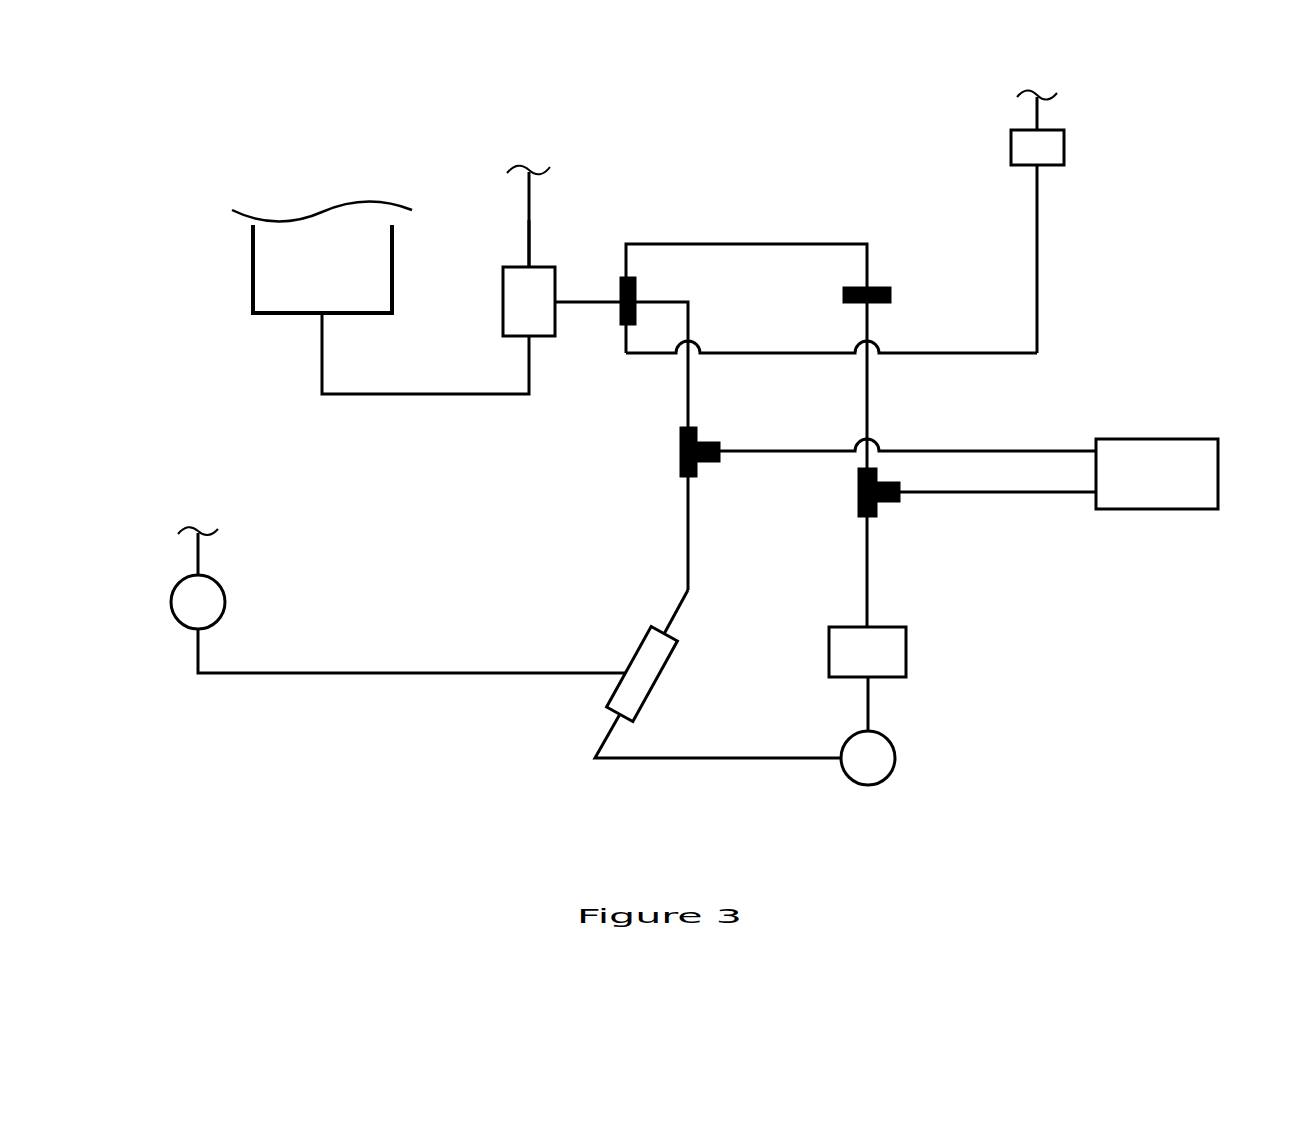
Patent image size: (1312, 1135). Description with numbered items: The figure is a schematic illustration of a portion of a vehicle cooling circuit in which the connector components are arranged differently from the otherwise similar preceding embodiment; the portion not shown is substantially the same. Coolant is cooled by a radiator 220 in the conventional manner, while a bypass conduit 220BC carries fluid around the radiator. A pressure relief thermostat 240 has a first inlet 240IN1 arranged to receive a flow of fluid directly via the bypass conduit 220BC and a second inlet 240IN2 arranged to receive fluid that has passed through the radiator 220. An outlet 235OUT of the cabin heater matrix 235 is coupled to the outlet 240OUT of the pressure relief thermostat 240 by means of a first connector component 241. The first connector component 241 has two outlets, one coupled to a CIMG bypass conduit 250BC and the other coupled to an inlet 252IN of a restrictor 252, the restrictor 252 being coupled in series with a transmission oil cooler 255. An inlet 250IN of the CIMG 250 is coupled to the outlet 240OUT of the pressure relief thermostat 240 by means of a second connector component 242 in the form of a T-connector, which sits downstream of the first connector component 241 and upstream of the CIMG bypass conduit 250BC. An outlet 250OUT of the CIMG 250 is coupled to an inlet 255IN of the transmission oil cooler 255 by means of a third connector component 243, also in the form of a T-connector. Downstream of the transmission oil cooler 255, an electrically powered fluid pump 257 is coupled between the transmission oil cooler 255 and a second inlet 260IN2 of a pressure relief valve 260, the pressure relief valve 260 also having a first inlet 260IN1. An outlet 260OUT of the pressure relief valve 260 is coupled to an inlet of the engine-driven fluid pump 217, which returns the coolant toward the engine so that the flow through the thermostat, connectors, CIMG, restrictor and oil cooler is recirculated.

The radiator 220 is at (258, 262).
The bypass conduit 220BC is at (530, 215).
The first inlet of the pressure relief thermostat 240IN1 is at (528, 248).
The second inlet of the pressure relief thermostat 240IN2 is at (530, 377).
The pressure relief thermostat 240 is at (548, 265).
The outlet of the pressure relief thermostat 240OUT is at (588, 303).
The inlet of the restrictor 252IN is at (807, 244).
The first connector component 241 is at (660, 300).
The restrictor 252 is at (891, 288).
The cabin heater matrix 235 is at (1064, 130).
The outlet of the cabin heater matrix 235OUT is at (1038, 235).
The second connector component 242 is at (698, 442).
The inlet of the CIMG 250IN is at (1018, 452).
The third connector component 243 is at (900, 502).
The outlet of the CIMG 250OUT is at (1040, 493).
The CIMG 250 is at (1167, 502).
The CIMG bypass conduit 250BC is at (688, 524).
The first inlet of the pressure relief valve 260IN1 is at (680, 613).
The pressure relief valve 260 is at (636, 654).
The second inlet of the pressure relief valve 260IN2 is at (608, 733).
The outlet of the pressure relief valve 260OUT is at (570, 673).
The engine-driven fluid pump 217 is at (225, 598).
The inlet of the transmission oil cooler 255IN is at (868, 563).
The transmission oil cooler 255 is at (906, 664).
The electrically powered fluid pump 257 is at (888, 777).